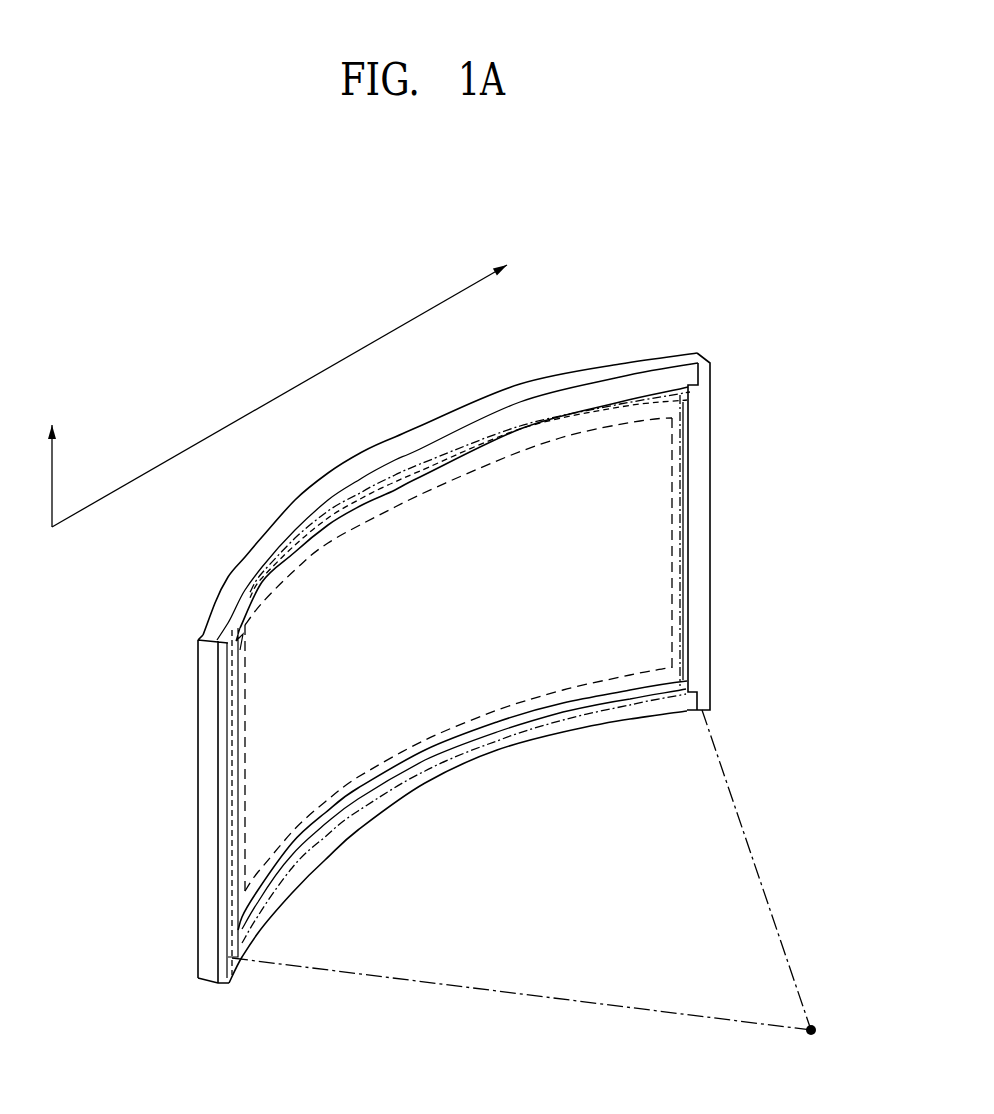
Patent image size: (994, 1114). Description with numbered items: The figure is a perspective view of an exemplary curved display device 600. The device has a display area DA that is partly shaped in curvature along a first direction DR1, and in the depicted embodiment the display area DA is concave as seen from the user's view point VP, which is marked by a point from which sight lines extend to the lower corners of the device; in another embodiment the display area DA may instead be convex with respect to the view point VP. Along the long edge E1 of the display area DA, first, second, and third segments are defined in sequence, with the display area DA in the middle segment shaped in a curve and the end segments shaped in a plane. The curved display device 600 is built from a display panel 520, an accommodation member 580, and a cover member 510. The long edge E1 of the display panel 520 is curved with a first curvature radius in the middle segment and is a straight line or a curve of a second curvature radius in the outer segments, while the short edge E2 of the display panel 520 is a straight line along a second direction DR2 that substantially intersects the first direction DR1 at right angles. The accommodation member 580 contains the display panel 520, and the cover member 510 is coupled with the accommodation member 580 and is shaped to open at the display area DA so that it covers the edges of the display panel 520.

The curved display device 600 is at (719, 344).
The accommodation member 580 is at (543, 383).
The cover member 510 is at (703, 523).
The display panel 520 is at (636, 574).
The display area DA is at (460, 725).
The long edge E1 is at (387, 480).
The short edge E2 is at (233, 828).
The first direction DR1 is at (298, 385).
The second direction DR2 is at (52, 463).
The view point VP is at (538, 884).